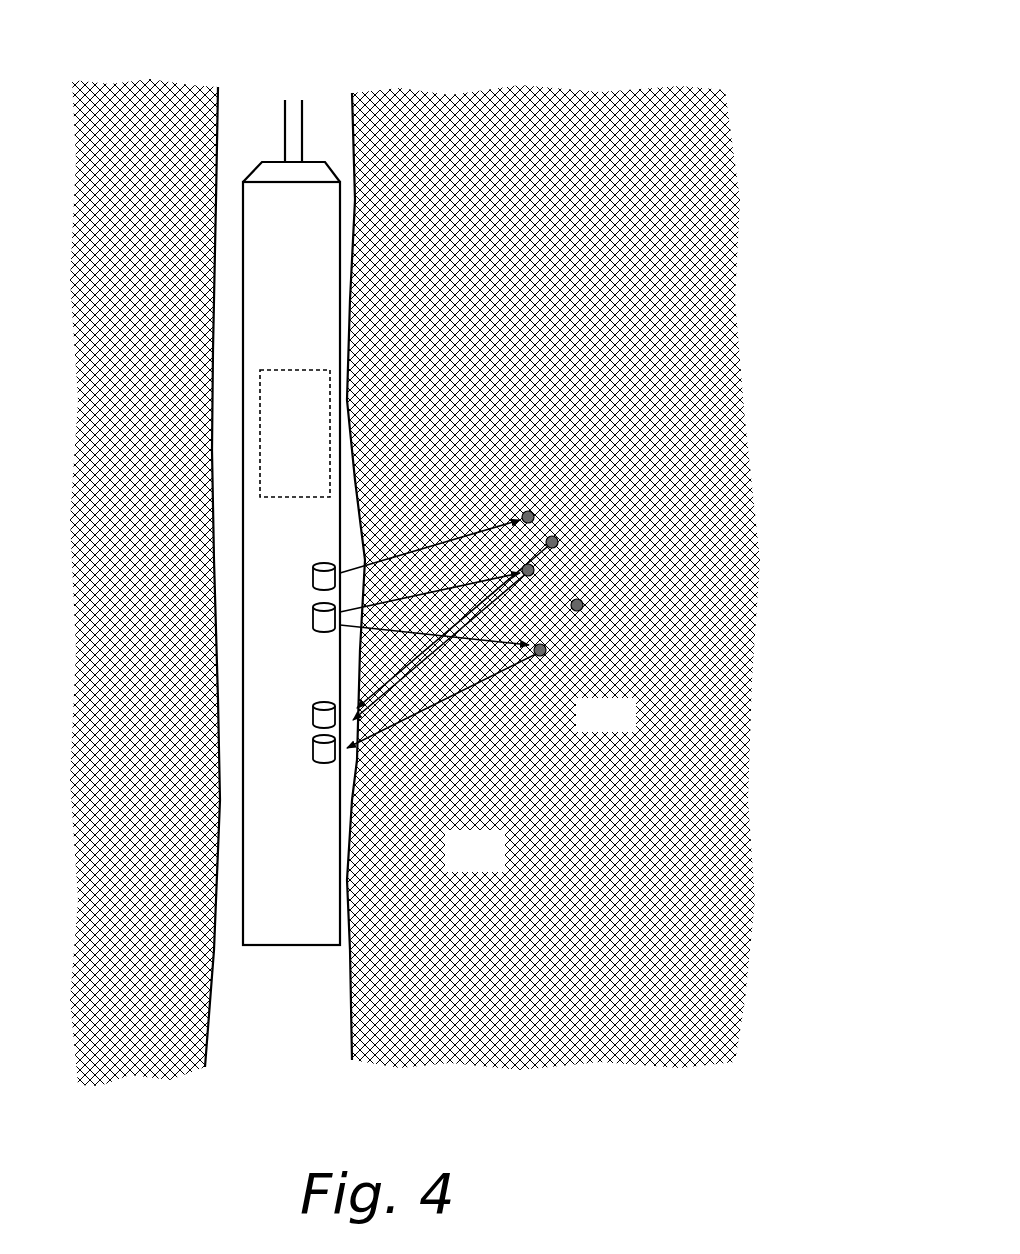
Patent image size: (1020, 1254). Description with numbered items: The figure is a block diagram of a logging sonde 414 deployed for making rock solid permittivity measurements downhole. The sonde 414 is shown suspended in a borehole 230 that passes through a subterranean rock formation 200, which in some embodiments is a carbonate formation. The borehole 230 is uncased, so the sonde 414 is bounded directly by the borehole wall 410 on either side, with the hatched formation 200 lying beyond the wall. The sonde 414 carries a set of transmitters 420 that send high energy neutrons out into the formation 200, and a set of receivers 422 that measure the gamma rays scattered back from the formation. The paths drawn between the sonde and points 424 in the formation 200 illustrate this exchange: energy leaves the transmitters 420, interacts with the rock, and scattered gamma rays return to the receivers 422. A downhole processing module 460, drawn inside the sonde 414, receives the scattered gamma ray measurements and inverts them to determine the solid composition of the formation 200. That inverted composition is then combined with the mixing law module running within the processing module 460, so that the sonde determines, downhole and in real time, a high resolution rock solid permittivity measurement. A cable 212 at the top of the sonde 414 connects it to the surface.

The subterranean rock formation 200 is at (453, 865).
The wireline cable 212 is at (303, 106).
The borehole 230 is at (282, 1025).
The borehole wall 410 is at (210, 1012).
The logging sonde 414 is at (274, 928).
The transmitters 420 is at (310, 563).
The receivers 422 is at (310, 702).
The scattering points in formation 424 is at (542, 656).
The downhole processing module 460 is at (316, 483).